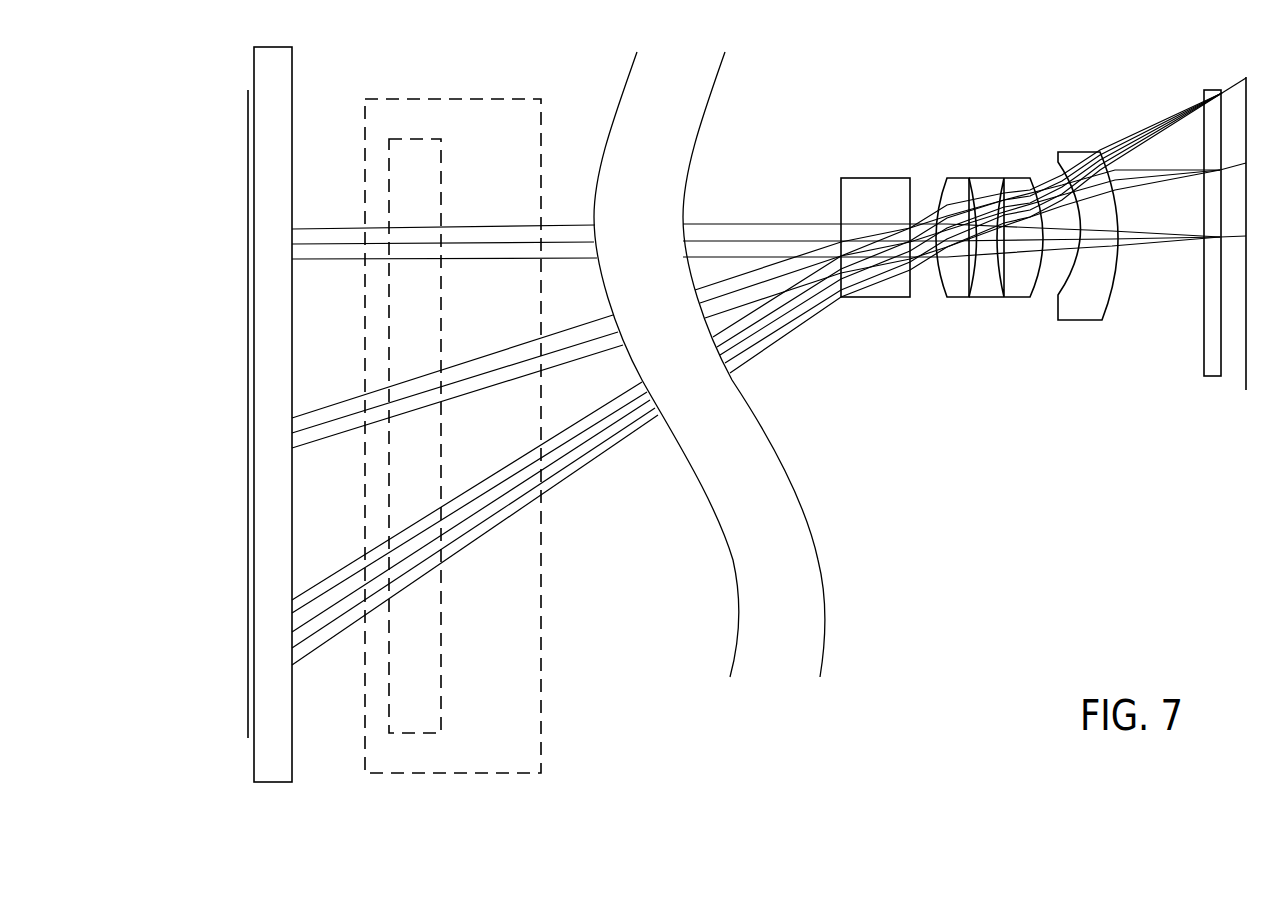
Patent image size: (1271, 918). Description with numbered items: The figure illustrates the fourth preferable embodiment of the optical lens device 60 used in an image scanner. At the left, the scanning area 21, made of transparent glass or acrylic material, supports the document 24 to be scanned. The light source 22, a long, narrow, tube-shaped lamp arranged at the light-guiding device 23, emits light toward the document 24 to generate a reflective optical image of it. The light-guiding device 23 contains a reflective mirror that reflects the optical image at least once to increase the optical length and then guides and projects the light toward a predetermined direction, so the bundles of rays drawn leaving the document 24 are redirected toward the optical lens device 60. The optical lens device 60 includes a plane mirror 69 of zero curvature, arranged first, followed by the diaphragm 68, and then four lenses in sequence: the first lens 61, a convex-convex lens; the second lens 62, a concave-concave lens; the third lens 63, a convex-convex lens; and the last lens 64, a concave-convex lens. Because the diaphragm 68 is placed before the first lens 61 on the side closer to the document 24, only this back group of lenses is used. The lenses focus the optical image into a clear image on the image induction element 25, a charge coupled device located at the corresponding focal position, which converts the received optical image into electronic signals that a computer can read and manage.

The scanning area 21 is at (257, 758).
The light source 22 is at (442, 680).
The light-guiding device 23 is at (545, 713).
The document 24 is at (247, 677).
The image induction element 25 is at (1206, 377).
The optical lens device 60 is at (981, 307).
The first lens 61 is at (955, 298).
The second lens 62 is at (983, 298).
The third lens 63 is at (1013, 298).
The last lens 64 is at (1088, 280).
The diaphragm 68 is at (923, 298).
The plane mirror 69 is at (872, 298).